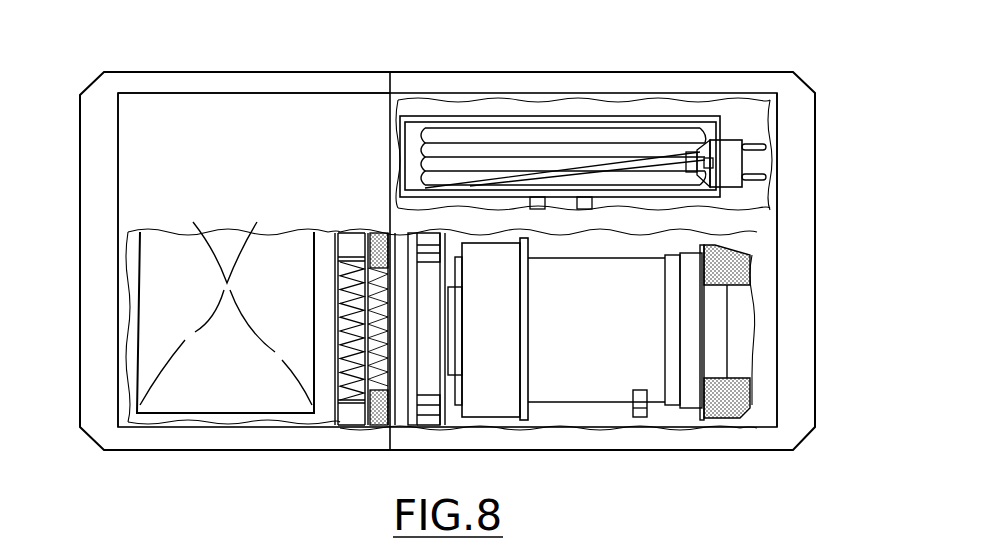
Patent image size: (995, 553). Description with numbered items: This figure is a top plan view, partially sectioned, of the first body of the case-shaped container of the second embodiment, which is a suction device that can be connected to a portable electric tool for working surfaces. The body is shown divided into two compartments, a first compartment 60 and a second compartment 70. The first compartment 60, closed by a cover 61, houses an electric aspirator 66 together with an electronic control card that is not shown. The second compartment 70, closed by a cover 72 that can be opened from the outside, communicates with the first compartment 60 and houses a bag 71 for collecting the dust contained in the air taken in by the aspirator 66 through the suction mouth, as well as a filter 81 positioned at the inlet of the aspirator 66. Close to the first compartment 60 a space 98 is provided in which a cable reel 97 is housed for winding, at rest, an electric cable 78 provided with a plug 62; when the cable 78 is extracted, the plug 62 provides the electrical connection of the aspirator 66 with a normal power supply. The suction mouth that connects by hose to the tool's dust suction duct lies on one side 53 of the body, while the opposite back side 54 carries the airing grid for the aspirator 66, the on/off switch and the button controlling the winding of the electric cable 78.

The side 53 is at (80, 262).
The back side 54 is at (815, 272).
The first compartment 60 is at (778, 240).
The cover 61 is at (742, 422).
The plug 62 is at (752, 133).
The electric aspirator 66 is at (613, 349).
The second compartment 70 is at (130, 270).
The bag 71 is at (245, 378).
The cover 72 is at (225, 135).
The electric cable 78 is at (680, 148).
The filter 81 is at (350, 405).
The cable reel 97 is at (415, 125).
The space 98 is at (595, 108).